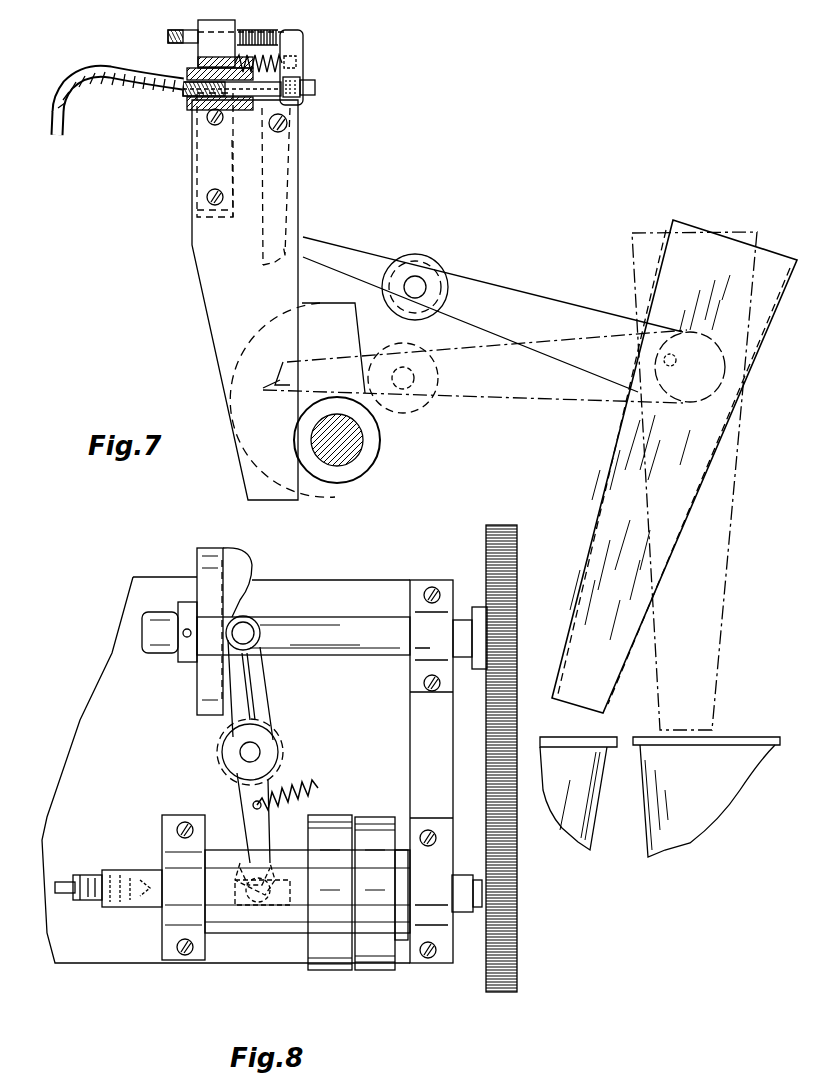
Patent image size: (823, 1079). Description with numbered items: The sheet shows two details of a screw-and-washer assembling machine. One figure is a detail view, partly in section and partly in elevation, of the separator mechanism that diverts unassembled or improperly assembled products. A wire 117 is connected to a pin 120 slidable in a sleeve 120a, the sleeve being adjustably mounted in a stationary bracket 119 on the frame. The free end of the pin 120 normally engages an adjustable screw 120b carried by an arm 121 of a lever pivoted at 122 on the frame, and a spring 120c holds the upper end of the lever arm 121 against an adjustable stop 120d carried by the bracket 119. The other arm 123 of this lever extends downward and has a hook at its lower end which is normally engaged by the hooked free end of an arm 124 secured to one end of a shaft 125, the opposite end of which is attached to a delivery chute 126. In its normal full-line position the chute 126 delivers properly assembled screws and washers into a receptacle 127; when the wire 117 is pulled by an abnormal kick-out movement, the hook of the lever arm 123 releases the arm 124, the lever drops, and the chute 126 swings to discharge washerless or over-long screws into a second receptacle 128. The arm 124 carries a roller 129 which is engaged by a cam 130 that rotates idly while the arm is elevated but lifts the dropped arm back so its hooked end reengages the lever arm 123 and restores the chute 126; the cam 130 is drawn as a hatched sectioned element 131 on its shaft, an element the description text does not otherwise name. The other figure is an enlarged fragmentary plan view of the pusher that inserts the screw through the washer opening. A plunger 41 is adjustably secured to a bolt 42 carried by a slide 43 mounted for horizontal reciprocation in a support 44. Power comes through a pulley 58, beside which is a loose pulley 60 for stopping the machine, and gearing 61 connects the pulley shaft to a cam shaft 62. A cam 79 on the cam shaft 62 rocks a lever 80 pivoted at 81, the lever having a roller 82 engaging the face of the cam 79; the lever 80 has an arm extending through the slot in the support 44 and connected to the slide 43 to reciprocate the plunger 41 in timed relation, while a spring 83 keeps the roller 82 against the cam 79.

In FIG. 8, the plunger 41 is at (63, 893).
In FIG. 8, the bolt 42 is at (93, 875).
In FIG. 8, the slide 43 is at (137, 870).
In FIG. 8, the support 44 is at (238, 935).
In FIG. 8, the pulley 58 is at (383, 967).
In FIG. 8, the loose pulley 60 is at (340, 968).
In FIG. 8, the gearing 61 is at (513, 850).
In FIG. 8, the cam shaft 62 is at (337, 623).
In FIG. 8, the cam 79 is at (203, 707).
In FIG. 8, the lever 80 is at (260, 715).
In FIG. 8, the pivot 81 is at (258, 753).
In FIG. 8, the roller 82 is at (260, 627).
In FIG. 8, the spring 83 is at (310, 783).
In FIG. 7, the wire 117 is at (120, 115).
In FIG. 7, the bracket 119 is at (203, 173).
In FIG. 7, the pin 120 is at (280, 107).
In FIG. 7, the sleeve 120a is at (183, 97).
In FIG. 7, the adjustable screw 120b is at (305, 90).
In FIG. 7, the spring 120c is at (253, 53).
In FIG. 7, the adjustable stop 120d is at (237, 53).
In FIG. 7, the lever arm 121 is at (298, 52).
In FIG. 7, the pivot 122 is at (287, 130).
In FIG. 7, the lever arm 123 is at (293, 200).
In FIG. 7, the arm 124 is at (515, 297).
In FIG. 7, the shaft 125 is at (723, 380).
In FIG. 7, the delivery chute 126 is at (690, 483).
In FIG. 7, the receptacle 127 is at (587, 847).
In FIG. 7, the second receptacle 128 is at (693, 830).
In FIG. 7, the roller 129 is at (442, 243).
In FIG. 7, the cam 130 is at (355, 340).
In FIG. 7, the pivot shaft 131 is at (350, 450).